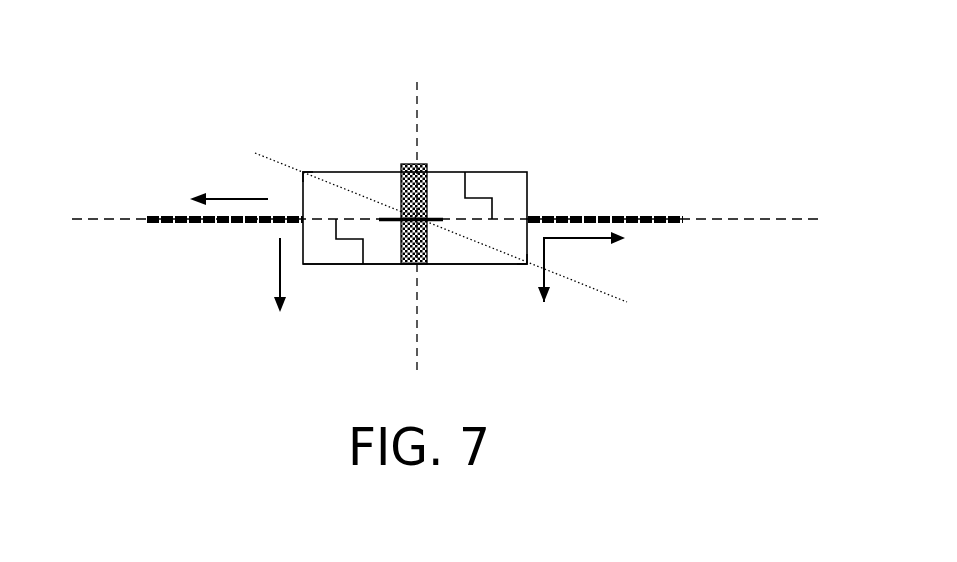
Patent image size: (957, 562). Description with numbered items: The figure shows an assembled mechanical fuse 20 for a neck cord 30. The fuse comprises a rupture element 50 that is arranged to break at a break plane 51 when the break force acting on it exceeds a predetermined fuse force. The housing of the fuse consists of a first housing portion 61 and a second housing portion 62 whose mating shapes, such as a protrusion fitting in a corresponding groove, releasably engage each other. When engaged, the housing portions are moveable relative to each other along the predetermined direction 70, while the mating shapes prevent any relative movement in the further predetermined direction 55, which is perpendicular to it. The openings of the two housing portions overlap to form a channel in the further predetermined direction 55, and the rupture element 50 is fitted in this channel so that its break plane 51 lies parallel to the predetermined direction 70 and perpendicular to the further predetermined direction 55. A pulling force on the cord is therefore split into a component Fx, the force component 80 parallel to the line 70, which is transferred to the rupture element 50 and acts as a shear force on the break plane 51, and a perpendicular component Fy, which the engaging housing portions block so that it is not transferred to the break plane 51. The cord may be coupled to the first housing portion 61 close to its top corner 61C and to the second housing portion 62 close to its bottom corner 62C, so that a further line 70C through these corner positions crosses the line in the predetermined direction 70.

The mechanical fuse 20 is at (557, 128).
The neck cord 30 is at (657, 217).
The rupture element 50 is at (430, 165).
The break plane 51 is at (433, 222).
The further predetermined direction 55 is at (420, 107).
The first housing portion 61 is at (370, 172).
The top corner 61C is at (303, 172).
The second housing portion 62 is at (378, 252).
The bottom corner 62C is at (525, 265).
The predetermined direction 70 is at (765, 217).
The further line 70C is at (472, 239).
The force component 80 is at (225, 179).